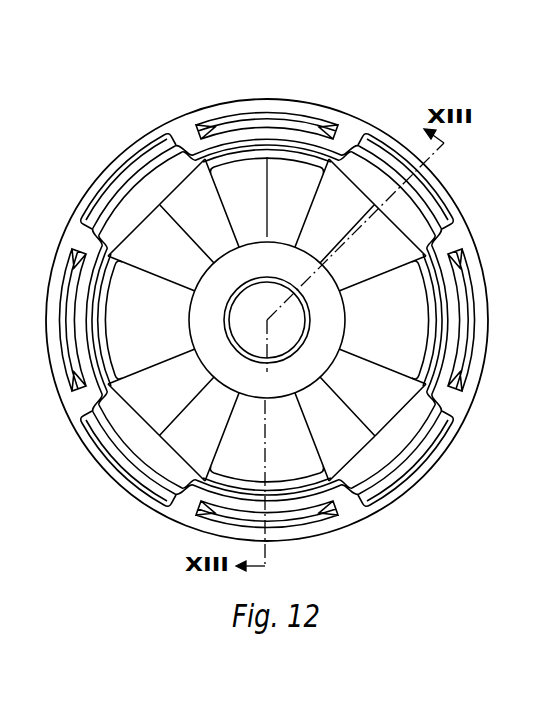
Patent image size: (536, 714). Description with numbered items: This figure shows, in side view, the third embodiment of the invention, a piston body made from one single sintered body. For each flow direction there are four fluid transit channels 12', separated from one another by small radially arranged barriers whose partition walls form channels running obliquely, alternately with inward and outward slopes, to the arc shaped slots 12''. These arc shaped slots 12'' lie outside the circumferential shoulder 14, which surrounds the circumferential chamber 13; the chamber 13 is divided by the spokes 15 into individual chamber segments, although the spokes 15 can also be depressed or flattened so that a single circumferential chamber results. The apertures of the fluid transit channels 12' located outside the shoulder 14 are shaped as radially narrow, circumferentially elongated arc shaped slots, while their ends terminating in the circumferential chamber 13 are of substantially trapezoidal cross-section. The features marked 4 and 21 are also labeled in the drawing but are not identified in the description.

The wheel body 4 is at (455, 190).
The fluid transit channel 12' is at (429, 320).
The arc shaped slot 12'' is at (423, 293).
The circumferential chamber 13 is at (203, 207).
The circumferential shoulder 14 is at (250, 150).
The spoke 15 is at (163, 210).
The recess 21 is at (348, 437).